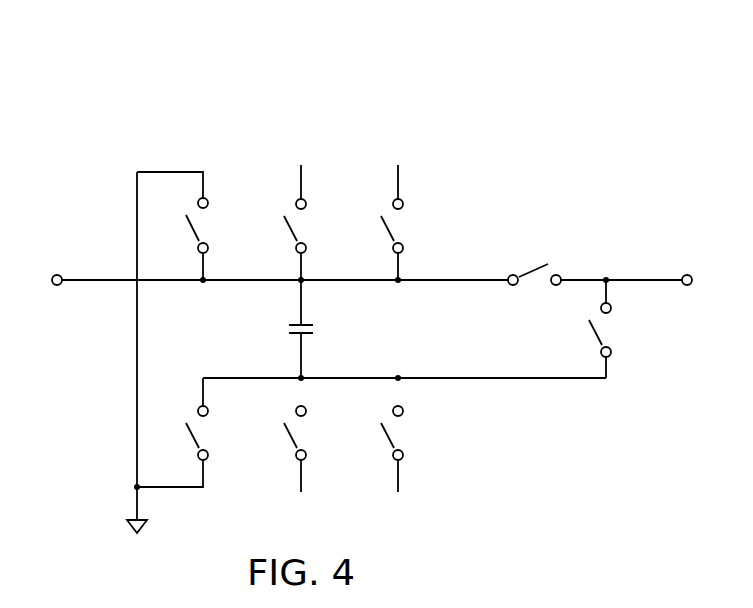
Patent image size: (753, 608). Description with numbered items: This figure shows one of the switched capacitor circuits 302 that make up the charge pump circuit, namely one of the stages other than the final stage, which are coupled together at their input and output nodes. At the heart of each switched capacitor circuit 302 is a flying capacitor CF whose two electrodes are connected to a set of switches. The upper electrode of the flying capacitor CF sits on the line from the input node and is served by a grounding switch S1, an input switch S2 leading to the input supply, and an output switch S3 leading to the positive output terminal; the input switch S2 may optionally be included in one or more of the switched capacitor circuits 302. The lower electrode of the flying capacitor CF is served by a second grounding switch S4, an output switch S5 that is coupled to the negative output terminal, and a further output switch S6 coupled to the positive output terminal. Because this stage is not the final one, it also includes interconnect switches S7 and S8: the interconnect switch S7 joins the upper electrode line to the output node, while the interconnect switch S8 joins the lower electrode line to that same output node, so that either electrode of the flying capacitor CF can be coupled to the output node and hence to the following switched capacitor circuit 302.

The switched capacitor circuit 302 is at (202, 99).
The grounding switch S1 is at (206, 225).
The input switch S2 is at (304, 226).
The output switch S3 is at (401, 226).
The grounding switch S4 is at (206, 433).
The output switch S5 is at (304, 433).
The output switch S6 is at (401, 433).
The interconnect switch S7 is at (534, 284).
The interconnect switch S8 is at (608, 330).
The flying capacitor CF is at (314, 331).